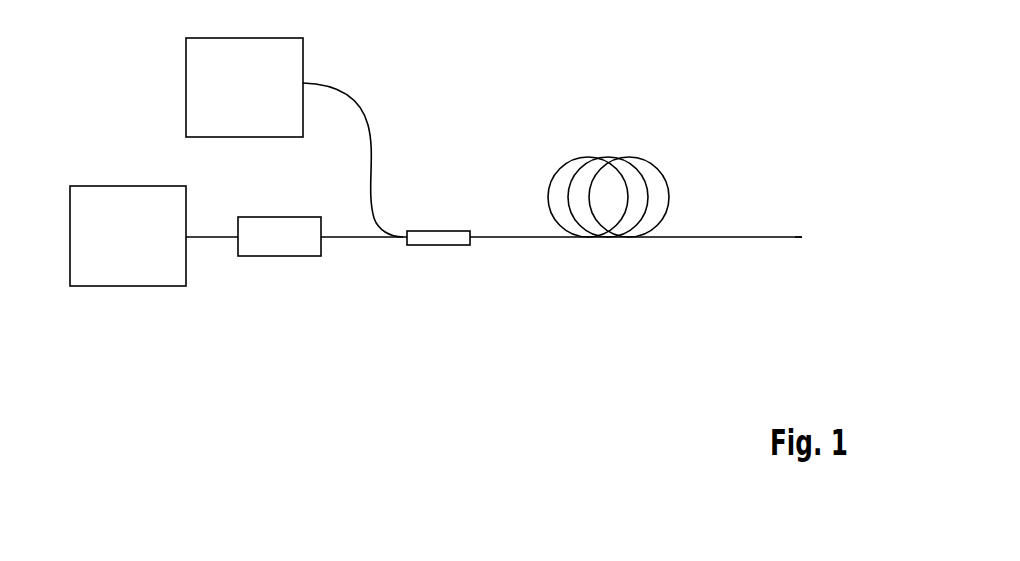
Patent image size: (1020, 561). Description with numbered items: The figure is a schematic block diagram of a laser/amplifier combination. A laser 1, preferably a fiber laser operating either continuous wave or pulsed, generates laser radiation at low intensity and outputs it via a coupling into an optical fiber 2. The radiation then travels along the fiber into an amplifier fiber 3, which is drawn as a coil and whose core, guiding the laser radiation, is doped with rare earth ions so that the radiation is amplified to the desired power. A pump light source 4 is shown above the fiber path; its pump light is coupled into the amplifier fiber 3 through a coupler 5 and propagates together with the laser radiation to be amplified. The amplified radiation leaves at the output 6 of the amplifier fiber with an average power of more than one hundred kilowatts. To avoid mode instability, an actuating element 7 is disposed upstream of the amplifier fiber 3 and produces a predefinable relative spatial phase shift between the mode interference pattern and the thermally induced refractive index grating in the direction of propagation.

The laser 1 is at (77, 245).
The optical fiber 2 is at (347, 238).
The amplifier fiber 3 is at (605, 158).
The pump light source 4 is at (192, 88).
The coupler 5 is at (437, 242).
The output 6 is at (805, 225).
The actuating element 7 is at (268, 242).